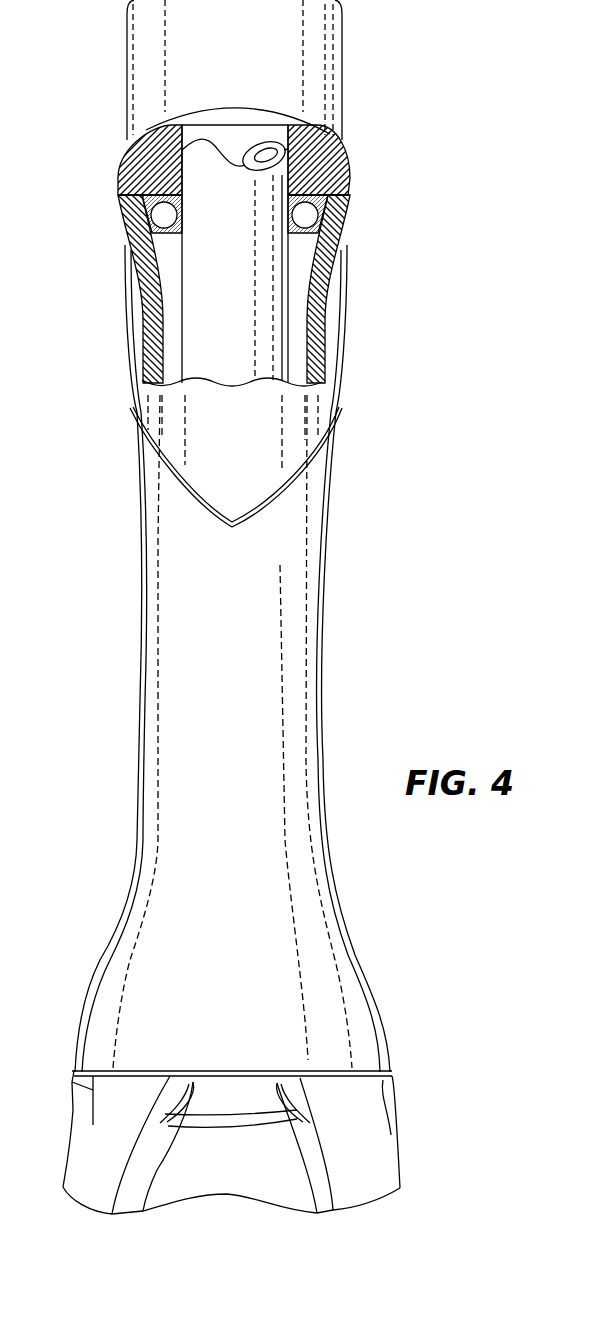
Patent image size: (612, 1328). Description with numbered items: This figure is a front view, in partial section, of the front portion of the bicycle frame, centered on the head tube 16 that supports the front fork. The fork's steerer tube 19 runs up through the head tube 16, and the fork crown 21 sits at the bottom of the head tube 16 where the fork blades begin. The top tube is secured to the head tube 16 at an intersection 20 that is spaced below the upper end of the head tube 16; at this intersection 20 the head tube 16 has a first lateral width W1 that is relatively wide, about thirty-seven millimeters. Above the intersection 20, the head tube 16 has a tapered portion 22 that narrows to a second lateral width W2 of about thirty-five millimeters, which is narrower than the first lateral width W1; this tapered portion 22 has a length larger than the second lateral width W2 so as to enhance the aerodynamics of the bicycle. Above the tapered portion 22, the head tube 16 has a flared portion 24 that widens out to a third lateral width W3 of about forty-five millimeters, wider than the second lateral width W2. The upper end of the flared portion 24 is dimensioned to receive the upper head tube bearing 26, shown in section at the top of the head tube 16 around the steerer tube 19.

The head tube 16 is at (307, 648).
The steerer tube 19 is at (265, 270).
The intersection 20 is at (133, 422).
The fork crown 21 is at (358, 1092).
The tapered portion 22 is at (143, 343).
The flared portion 24 is at (120, 213).
The upper head tube bearing 26 is at (337, 153).
The first lateral width W1 is at (137, 412).
The second lateral width W2 is at (143, 332).
The third lateral width W3 is at (120, 203).